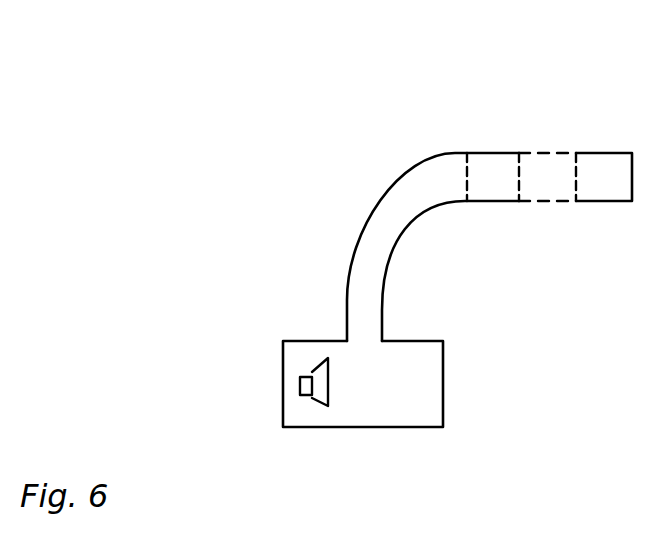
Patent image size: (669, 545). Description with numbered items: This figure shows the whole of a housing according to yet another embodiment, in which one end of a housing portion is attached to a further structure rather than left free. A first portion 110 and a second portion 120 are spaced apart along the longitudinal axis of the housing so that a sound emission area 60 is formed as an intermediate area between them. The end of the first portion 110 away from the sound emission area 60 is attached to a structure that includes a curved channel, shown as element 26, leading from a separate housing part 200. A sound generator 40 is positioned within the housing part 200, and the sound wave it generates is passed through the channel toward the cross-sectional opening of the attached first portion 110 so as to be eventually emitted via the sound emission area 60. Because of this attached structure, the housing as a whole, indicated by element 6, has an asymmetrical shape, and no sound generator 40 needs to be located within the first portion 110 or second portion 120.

The audio device 6 is at (314, 98).
The tube 26 is at (350, 206).
The sound emission area 60 is at (535, 114).
The first portion 110 is at (492, 230).
The second portion 120 is at (602, 227).
The housing part 200 is at (470, 375).
The sound generator 40 is at (308, 362).